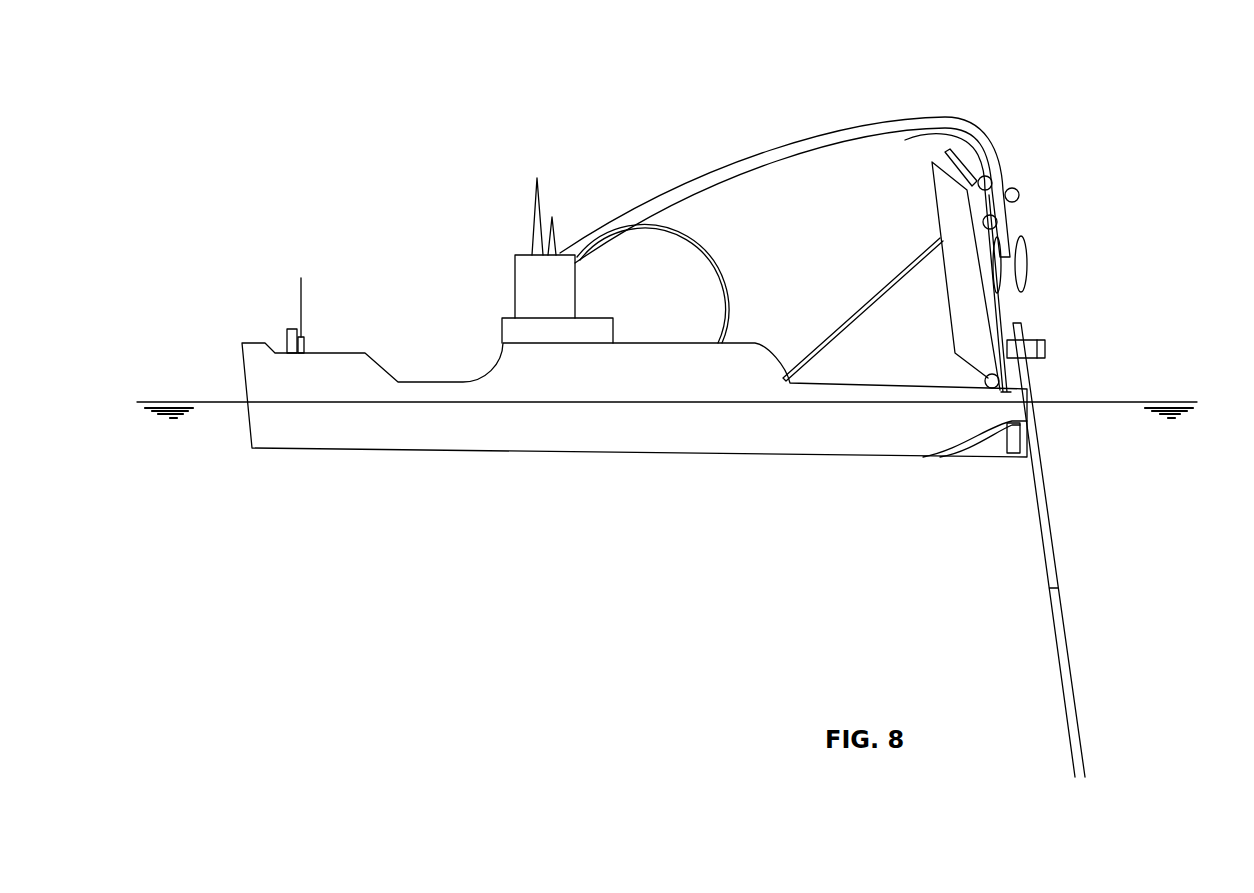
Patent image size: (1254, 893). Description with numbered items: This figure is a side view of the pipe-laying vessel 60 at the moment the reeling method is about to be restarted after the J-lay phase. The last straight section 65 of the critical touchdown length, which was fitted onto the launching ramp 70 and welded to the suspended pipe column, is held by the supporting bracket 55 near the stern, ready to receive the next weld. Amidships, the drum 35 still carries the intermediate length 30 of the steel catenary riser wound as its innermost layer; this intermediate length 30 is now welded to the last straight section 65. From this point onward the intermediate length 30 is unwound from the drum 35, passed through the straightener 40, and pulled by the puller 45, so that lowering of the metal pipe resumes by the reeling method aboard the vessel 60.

The intermediate length 30 is at (880, 120).
The drum 35 is at (703, 248).
The straightener 40 is at (1020, 194).
The puller 45 is at (1028, 266).
The supporting bracket 55 is at (1046, 349).
The vessel 60 is at (360, 377).
The straight section 65 is at (1070, 657).
The launching ramp 70 is at (948, 308).